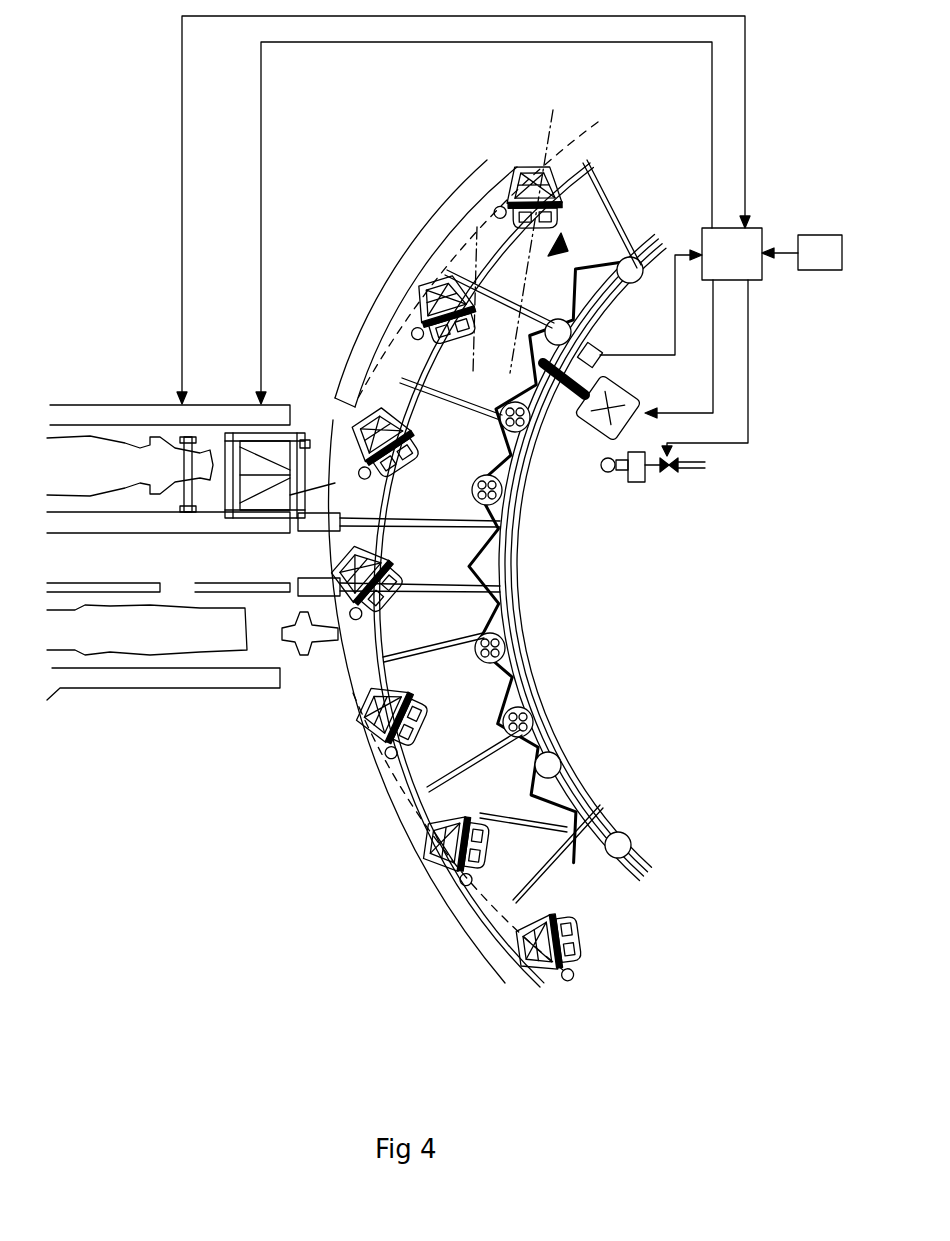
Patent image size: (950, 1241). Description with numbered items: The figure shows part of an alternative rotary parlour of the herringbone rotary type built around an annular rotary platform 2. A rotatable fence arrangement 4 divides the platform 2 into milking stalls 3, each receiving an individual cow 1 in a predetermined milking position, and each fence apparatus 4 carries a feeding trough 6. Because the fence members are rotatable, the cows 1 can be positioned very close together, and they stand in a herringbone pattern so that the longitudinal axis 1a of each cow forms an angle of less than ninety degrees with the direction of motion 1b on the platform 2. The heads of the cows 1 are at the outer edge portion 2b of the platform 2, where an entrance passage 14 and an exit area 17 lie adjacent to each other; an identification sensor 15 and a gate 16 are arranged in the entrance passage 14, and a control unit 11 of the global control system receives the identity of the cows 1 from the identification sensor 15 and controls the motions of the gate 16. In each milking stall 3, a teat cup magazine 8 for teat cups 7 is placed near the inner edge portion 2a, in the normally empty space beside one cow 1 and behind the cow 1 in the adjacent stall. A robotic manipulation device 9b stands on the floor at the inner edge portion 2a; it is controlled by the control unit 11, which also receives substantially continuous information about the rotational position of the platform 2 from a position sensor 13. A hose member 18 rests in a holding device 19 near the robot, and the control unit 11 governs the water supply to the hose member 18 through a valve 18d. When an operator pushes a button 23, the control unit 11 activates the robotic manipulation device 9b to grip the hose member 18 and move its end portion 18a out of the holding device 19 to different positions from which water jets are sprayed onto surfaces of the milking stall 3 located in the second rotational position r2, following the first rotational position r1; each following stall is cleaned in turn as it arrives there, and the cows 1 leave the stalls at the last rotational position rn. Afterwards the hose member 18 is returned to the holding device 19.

The cow 1 is at (135, 460).
The longitudinal axis of the cow 1a is at (548, 140).
The direction of motion 1b is at (540, 283).
The annular rotary platform 2 is at (427, 798).
The inner edge portion 2a is at (553, 742).
The outer edge portion 2b is at (378, 778).
The milking stall 3 is at (510, 888).
The rotatable fence arrangement 4 is at (337, 480).
The feeding trough 6 is at (440, 295).
The teat cup 7 is at (527, 727).
The teat cup magazine 8 is at (505, 648).
The robotic manipulation device 9b is at (615, 400).
The control unit 11 is at (733, 255).
The position sensor 13 is at (598, 350).
The entrance passage 14 is at (162, 493).
The identification sensor 15 is at (187, 432).
The gate 16 is at (250, 430).
The exit area 17 is at (265, 648).
The hose member 18 is at (618, 470).
The end portion of the hose member 18a is at (605, 462).
The valve 18d is at (672, 468).
The holding device 19 is at (637, 482).
The button 23 is at (817, 255).
The first rotational position r1 is at (410, 403).
The second rotational position r2 is at (490, 240).
The last rotational position rn is at (363, 677).